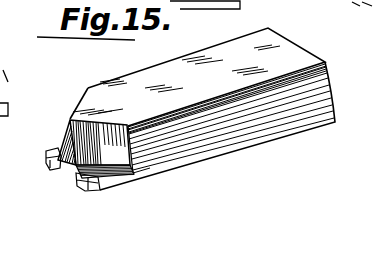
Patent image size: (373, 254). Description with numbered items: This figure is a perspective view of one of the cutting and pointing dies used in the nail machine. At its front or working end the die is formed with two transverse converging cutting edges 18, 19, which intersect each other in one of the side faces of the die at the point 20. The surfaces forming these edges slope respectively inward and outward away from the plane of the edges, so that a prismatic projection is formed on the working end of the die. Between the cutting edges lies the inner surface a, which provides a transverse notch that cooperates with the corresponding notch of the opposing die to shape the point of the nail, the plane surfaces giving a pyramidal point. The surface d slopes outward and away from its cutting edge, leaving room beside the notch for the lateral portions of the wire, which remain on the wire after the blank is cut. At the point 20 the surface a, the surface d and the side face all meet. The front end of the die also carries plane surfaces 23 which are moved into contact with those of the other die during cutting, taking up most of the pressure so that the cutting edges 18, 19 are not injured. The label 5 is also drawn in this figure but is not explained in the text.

The hone block 5 is at (258, 55).
The intersection point of the cutting edges 20 is at (70, 118).
The transverse converging cutting edge 19 is at (71, 167).
The outwardly sloping surface d is at (125, 150).
The inner surface a is at (72, 166).
The transverse converging cutting edge 18 is at (52, 167).
The plane surface 23 is at (47, 153).